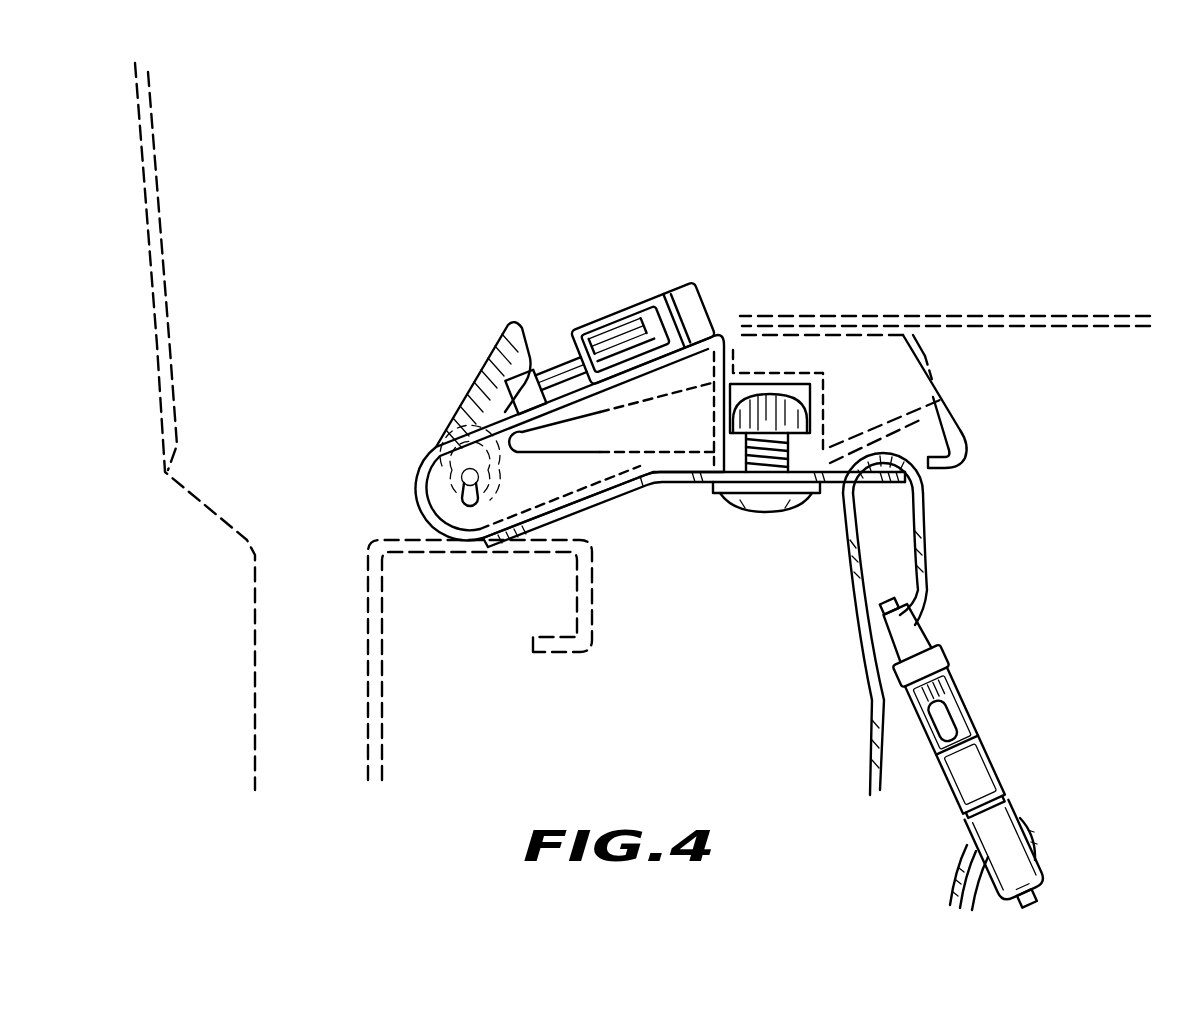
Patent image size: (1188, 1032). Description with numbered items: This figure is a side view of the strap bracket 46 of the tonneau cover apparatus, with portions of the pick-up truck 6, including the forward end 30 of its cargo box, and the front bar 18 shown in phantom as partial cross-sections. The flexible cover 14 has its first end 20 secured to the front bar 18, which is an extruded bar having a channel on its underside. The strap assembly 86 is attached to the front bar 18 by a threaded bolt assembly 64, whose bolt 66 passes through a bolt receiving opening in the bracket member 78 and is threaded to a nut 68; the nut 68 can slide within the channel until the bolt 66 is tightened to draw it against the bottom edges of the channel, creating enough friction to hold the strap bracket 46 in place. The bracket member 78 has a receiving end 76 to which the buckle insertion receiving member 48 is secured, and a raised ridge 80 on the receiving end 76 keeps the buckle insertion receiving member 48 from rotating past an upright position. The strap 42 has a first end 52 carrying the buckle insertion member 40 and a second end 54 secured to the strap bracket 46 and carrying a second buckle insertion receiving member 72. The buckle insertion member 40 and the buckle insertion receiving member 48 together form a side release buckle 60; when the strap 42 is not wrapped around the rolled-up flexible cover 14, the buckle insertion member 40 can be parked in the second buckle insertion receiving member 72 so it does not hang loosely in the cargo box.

The pick-up truck 6 is at (166, 209).
The flexible cover 14 is at (1000, 318).
The front bar 18 is at (962, 407).
The first end of the flexible cover 20 is at (457, 483).
The forward end of the cargo box 30 is at (378, 728).
The buckle insertion member 40 is at (1043, 868).
The strap 42 is at (928, 550).
The strap bracket 46 is at (426, 446).
The buckle insertion receiving member 48 is at (700, 272).
The first end of the strap 52 is at (1025, 830).
The second end of the strap 54 is at (920, 503).
The buckle 60 is at (983, 752).
The threaded bolt assembly 64 is at (773, 518).
The bolt 66 is at (746, 513).
The nut 68 is at (808, 428).
The second buckle insertion receiving member 72 is at (963, 688).
The receiving end of the bracket member 76 is at (488, 366).
The bracket member 78 is at (622, 497).
The raised ridge 80 is at (517, 322).
The strap assembly 86 is at (546, 364).